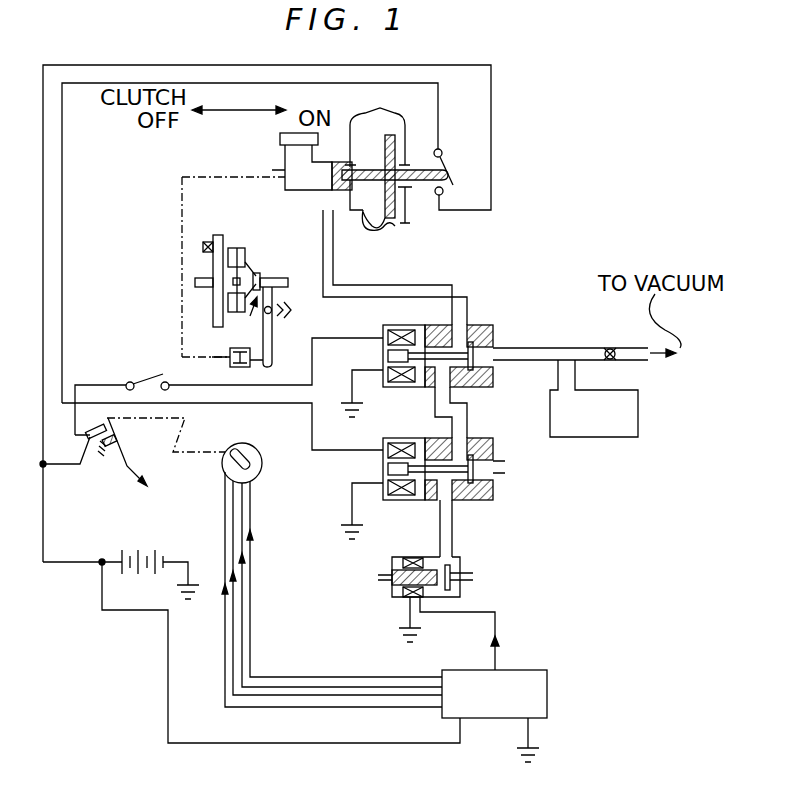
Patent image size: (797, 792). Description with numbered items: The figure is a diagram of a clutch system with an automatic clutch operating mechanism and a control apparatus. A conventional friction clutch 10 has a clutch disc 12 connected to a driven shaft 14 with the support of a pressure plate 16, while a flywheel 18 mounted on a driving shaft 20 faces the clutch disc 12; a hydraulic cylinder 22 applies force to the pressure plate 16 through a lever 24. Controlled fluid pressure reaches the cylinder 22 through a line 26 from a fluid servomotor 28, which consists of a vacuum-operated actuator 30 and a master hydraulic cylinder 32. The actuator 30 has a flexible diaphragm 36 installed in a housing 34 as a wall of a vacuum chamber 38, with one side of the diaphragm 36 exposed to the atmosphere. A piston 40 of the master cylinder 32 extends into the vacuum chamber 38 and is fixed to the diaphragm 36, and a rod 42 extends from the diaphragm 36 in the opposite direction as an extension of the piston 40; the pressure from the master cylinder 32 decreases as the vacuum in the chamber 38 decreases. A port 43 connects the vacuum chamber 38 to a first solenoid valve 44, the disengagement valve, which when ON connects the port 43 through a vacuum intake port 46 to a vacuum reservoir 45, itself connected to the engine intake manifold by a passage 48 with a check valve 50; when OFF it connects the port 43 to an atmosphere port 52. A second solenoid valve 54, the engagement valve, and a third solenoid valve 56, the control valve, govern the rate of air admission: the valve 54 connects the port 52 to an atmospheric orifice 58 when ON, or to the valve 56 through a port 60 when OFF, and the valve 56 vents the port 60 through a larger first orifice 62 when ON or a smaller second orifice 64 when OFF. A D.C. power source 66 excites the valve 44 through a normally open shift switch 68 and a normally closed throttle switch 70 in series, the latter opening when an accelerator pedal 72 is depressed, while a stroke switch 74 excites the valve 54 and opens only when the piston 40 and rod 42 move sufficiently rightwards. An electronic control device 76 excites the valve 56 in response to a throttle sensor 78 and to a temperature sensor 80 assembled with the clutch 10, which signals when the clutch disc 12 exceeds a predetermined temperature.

The friction clutch 10 is at (248, 320).
The clutch disc 12 is at (243, 248).
The driven shaft 14 is at (286, 278).
The pressure plate 16 is at (258, 273).
The flywheel 18 is at (220, 235).
The driving shaft 20 is at (195, 283).
The hydraulic cylinder 22 is at (230, 357).
The lever 24 is at (272, 340).
The line 26 is at (182, 200).
The fluid servomotor 28 is at (346, 114).
The vacuum-operated actuator 30 is at (412, 108).
The master hydraulic cylinder 32 is at (285, 152).
The housing 34 is at (412, 220).
The flexible diaphragm 36 is at (374, 228).
The vacuum chamber 38 is at (363, 215).
The piston 40 is at (330, 190).
The rod 42 is at (425, 166).
The port 43 is at (462, 290).
The first solenoid valve 44 is at (492, 325).
The vacuum reservoir 45 is at (603, 425).
The vacuum intake port 46 is at (540, 348).
The passage 48 is at (645, 362).
The check valve 50 is at (602, 342).
The atmosphere port 52 is at (465, 413).
The second solenoid valve 54 is at (400, 438).
The third solenoid valve 56 is at (410, 557).
The orifice 58 is at (505, 470).
The port 60 is at (452, 530).
The first orifice 62 is at (473, 577).
The second orifice 64 is at (378, 578).
The D.C. power source 66 is at (137, 555).
The shift switch 68 is at (162, 378).
The throttle switch 70 is at (97, 440).
The accelerator pedal 72 is at (148, 484).
The stroke switch 74 is at (445, 150).
The electronic control device 76 is at (525, 670).
The throttle sensor 78 is at (262, 466).
The temperature sensor 80 is at (203, 247).